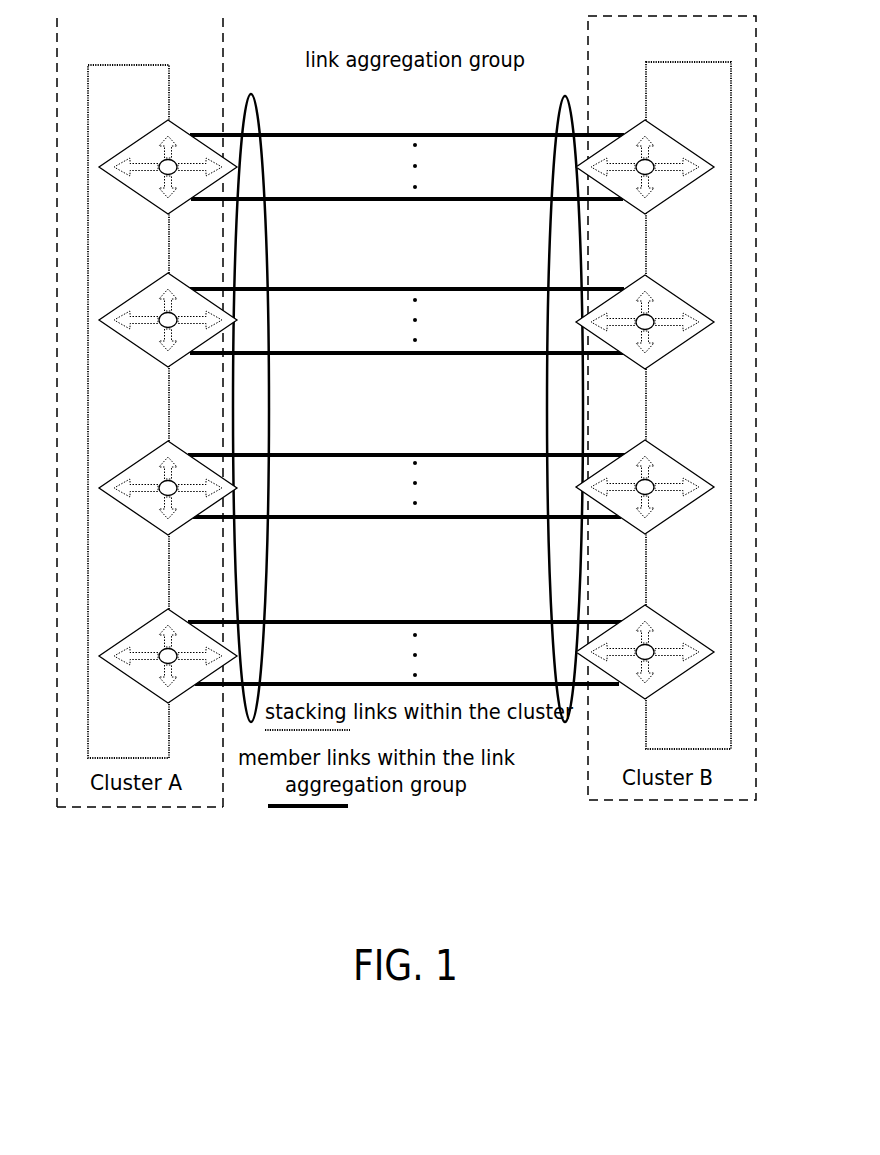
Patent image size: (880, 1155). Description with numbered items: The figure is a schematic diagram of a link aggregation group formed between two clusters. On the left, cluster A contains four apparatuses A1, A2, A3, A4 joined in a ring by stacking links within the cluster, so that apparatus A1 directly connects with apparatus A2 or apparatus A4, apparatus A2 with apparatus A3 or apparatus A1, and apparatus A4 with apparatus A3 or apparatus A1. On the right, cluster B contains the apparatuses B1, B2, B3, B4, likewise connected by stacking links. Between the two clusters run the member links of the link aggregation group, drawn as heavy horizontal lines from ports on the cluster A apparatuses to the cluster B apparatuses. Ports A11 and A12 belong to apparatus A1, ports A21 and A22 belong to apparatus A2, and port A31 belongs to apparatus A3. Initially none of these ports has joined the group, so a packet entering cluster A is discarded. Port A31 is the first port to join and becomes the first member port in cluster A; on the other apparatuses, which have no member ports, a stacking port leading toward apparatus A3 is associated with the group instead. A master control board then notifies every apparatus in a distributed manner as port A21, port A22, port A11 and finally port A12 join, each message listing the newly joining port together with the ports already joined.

The apparatus A1 is at (124, 167).
The apparatus A2 is at (124, 322).
The apparatus A3 is at (124, 489).
The apparatus A4 is at (124, 656).
The apparatus B1 is at (688, 167).
The apparatus B2 is at (686, 322).
The apparatus B3 is at (683, 491).
The apparatus B4 is at (683, 656).
The port A11 is at (407, 118).
The port A12 is at (407, 182).
The port A21 is at (407, 275).
The port A22 is at (407, 338).
The port A31 is at (407, 486).